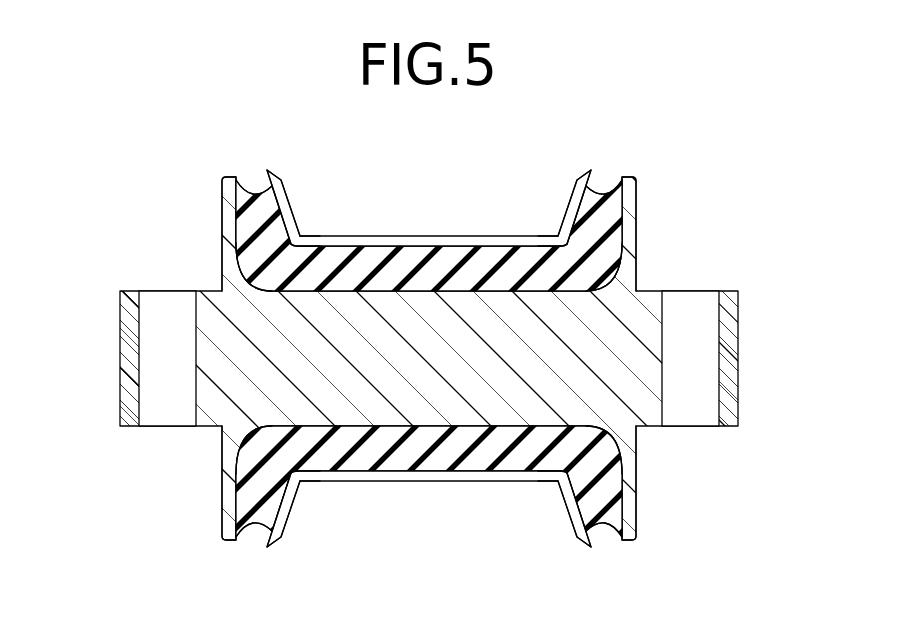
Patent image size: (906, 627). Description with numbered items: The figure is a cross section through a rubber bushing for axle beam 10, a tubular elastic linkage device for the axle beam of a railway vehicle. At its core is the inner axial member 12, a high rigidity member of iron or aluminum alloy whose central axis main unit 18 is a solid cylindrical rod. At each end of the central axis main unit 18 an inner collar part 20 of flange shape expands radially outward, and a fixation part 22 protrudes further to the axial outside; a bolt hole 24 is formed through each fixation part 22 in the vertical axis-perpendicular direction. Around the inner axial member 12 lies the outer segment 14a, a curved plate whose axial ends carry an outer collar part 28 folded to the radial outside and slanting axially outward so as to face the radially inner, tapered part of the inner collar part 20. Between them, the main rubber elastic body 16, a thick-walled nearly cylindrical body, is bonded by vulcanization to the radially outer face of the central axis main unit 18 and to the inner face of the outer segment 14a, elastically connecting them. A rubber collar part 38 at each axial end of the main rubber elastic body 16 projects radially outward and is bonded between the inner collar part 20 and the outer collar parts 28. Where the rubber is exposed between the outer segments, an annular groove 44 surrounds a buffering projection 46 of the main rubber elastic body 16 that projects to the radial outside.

The rubber bushing for axle beam 10 is at (692, 201).
The inner axial member 12 is at (657, 280).
The outer segment 14a is at (455, 232).
The main rubber elastic body 16 is at (466, 481).
The central axis main unit 18 is at (385, 395).
The inner collar part 20 is at (628, 470).
The fixation part 22 is at (130, 327).
The bolt hole 24 is at (140, 365).
The outer collar part 28 is at (573, 213).
The rubber collar part 38 is at (252, 236).
The annular groove 44 is at (297, 236).
The buffering projection 46 is at (393, 268).